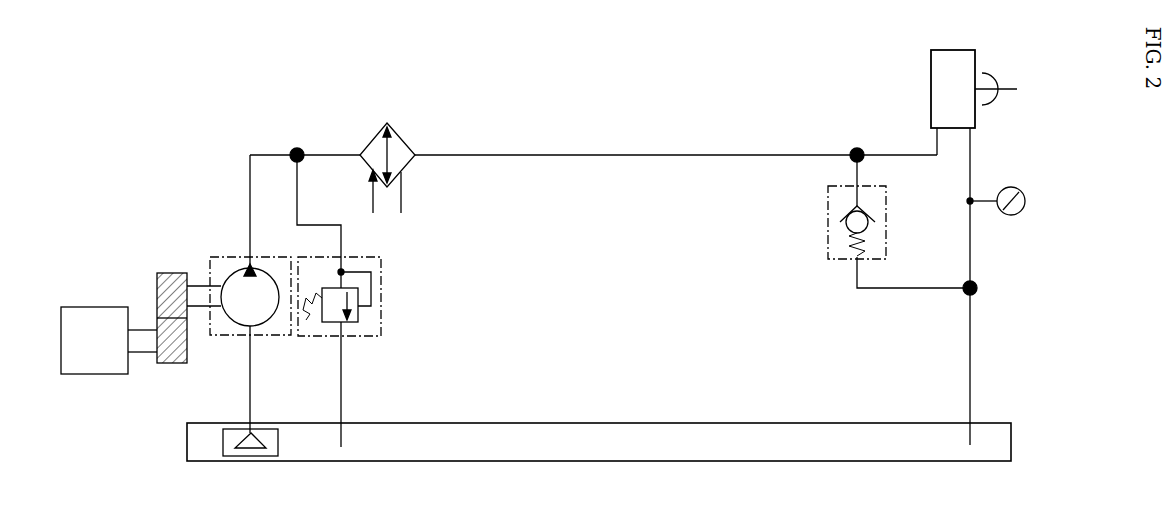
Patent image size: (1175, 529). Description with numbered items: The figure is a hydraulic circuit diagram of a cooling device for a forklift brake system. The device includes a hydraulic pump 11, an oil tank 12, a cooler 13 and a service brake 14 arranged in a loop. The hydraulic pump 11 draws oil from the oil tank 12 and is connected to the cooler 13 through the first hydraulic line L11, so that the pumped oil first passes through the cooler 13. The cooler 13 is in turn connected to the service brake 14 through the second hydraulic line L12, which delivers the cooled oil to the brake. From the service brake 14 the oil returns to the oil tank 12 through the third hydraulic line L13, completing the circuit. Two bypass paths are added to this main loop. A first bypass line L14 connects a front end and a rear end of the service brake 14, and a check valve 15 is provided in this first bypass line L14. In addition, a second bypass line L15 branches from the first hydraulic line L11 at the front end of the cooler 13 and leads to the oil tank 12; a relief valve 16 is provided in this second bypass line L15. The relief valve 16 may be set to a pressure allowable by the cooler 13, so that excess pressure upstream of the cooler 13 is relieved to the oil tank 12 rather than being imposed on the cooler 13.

The hydraulic pump 11 is at (233, 268).
The oil tank 12 is at (603, 423).
The cooler 13 is at (400, 138).
The service brake 14 is at (930, 86).
The check valve 15 is at (840, 213).
The relief valve 16 is at (372, 272).
The first hydraulic line L11 is at (268, 153).
The second hydraulic line L12 is at (663, 153).
The third hydraulic line L13 is at (970, 362).
The first bypass line L14 is at (905, 290).
The second bypass line L15 is at (342, 378).